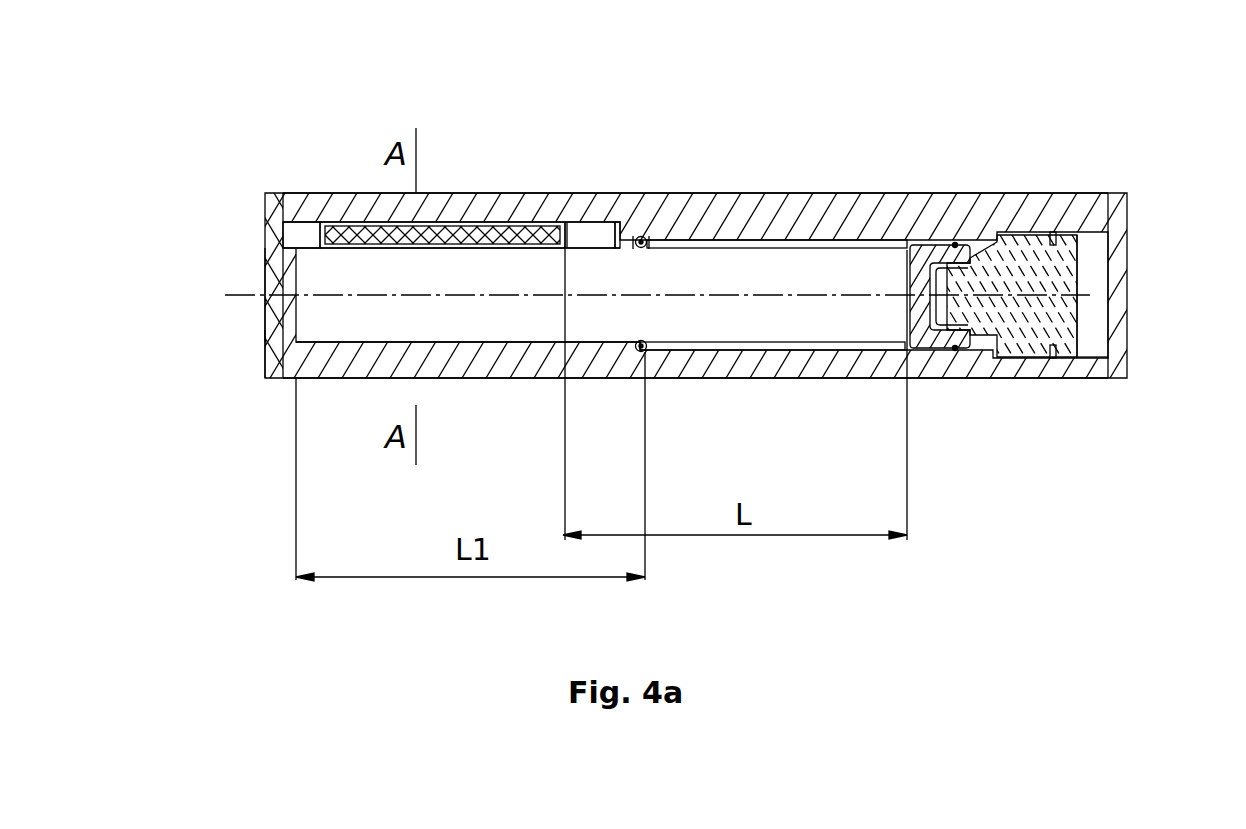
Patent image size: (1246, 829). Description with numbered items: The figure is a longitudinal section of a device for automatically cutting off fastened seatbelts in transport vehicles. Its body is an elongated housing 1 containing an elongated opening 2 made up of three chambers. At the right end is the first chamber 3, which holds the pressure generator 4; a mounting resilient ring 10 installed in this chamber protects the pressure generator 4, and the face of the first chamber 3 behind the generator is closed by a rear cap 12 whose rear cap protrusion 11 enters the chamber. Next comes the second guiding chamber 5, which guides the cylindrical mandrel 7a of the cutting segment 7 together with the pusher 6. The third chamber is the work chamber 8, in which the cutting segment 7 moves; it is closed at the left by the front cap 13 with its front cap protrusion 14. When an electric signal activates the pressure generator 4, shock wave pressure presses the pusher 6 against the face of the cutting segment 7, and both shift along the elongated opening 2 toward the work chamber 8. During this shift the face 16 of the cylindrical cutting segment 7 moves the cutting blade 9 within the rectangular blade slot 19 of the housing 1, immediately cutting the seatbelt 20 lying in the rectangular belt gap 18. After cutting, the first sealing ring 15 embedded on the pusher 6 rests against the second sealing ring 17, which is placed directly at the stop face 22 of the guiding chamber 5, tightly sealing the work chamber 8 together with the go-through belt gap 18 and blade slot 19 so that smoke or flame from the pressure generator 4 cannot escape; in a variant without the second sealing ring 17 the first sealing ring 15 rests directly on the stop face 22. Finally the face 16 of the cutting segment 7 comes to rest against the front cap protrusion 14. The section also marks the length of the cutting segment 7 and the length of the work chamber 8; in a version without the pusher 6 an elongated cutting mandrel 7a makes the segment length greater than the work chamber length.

The elongated housing 1 is at (432, 365).
The elongated opening 2 is at (457, 343).
The first chamber 3 is at (1010, 257).
The pressure generator 4 is at (1058, 260).
The second guiding chamber 5 is at (768, 212).
The pusher 6 is at (922, 250).
The cutting segment 7 is at (620, 270).
The cylindrical mandrel 7a is at (610, 232).
The work chamber 8 is at (397, 342).
The cutting blade 9 is at (567, 270).
The mounting resilient ring 10 is at (1053, 357).
The rear cap protrusion 11 is at (1093, 348).
The rear cap 12 is at (1117, 253).
The front cap 13 is at (265, 340).
The front cap protrusion 14 is at (265, 297).
The first sealing ring 15 is at (956, 245).
The face of the cutting segment 16 is at (557, 240).
The second sealing ring 17 is at (650, 234).
The rectangular belt gap 18 is at (322, 235).
The rectangular blade slot 19 is at (281, 218).
The seatbelt 20 is at (503, 233).
The stop face 22 is at (641, 236).